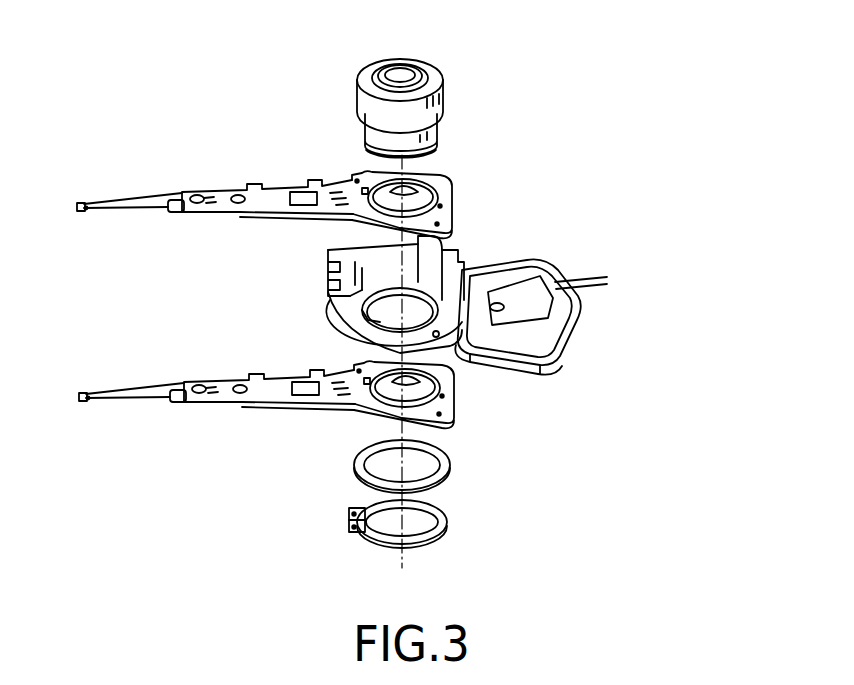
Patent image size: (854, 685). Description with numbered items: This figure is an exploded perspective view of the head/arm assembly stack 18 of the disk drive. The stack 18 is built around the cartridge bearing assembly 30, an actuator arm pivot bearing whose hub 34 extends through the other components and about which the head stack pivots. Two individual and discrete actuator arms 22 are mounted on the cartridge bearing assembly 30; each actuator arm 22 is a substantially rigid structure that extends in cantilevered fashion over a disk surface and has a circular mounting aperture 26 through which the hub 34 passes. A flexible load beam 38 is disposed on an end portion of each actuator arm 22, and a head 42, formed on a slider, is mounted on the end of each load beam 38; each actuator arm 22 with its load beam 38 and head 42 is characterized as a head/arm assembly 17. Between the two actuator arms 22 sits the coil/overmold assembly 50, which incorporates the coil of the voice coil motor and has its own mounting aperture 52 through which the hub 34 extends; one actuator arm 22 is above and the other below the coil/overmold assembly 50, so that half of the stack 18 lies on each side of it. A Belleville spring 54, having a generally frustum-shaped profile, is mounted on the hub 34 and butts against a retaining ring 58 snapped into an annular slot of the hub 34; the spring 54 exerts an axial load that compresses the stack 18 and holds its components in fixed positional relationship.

The head/arm assembly 17 is at (232, 164).
The head/arm assembly stack 18 is at (572, 148).
The actuator arm 22 is at (444, 195).
The mounting aperture 26 is at (408, 190).
The cartridge bearing assembly 30 is at (437, 79).
The hub 34 is at (437, 130).
The load beam 38 is at (160, 194).
The head 42 is at (79, 202).
The coil/overmold assembly 50 is at (572, 338).
The mounting aperture 52 is at (390, 312).
The Belleville spring 54 is at (448, 463).
The retaining ring 58 is at (443, 523).